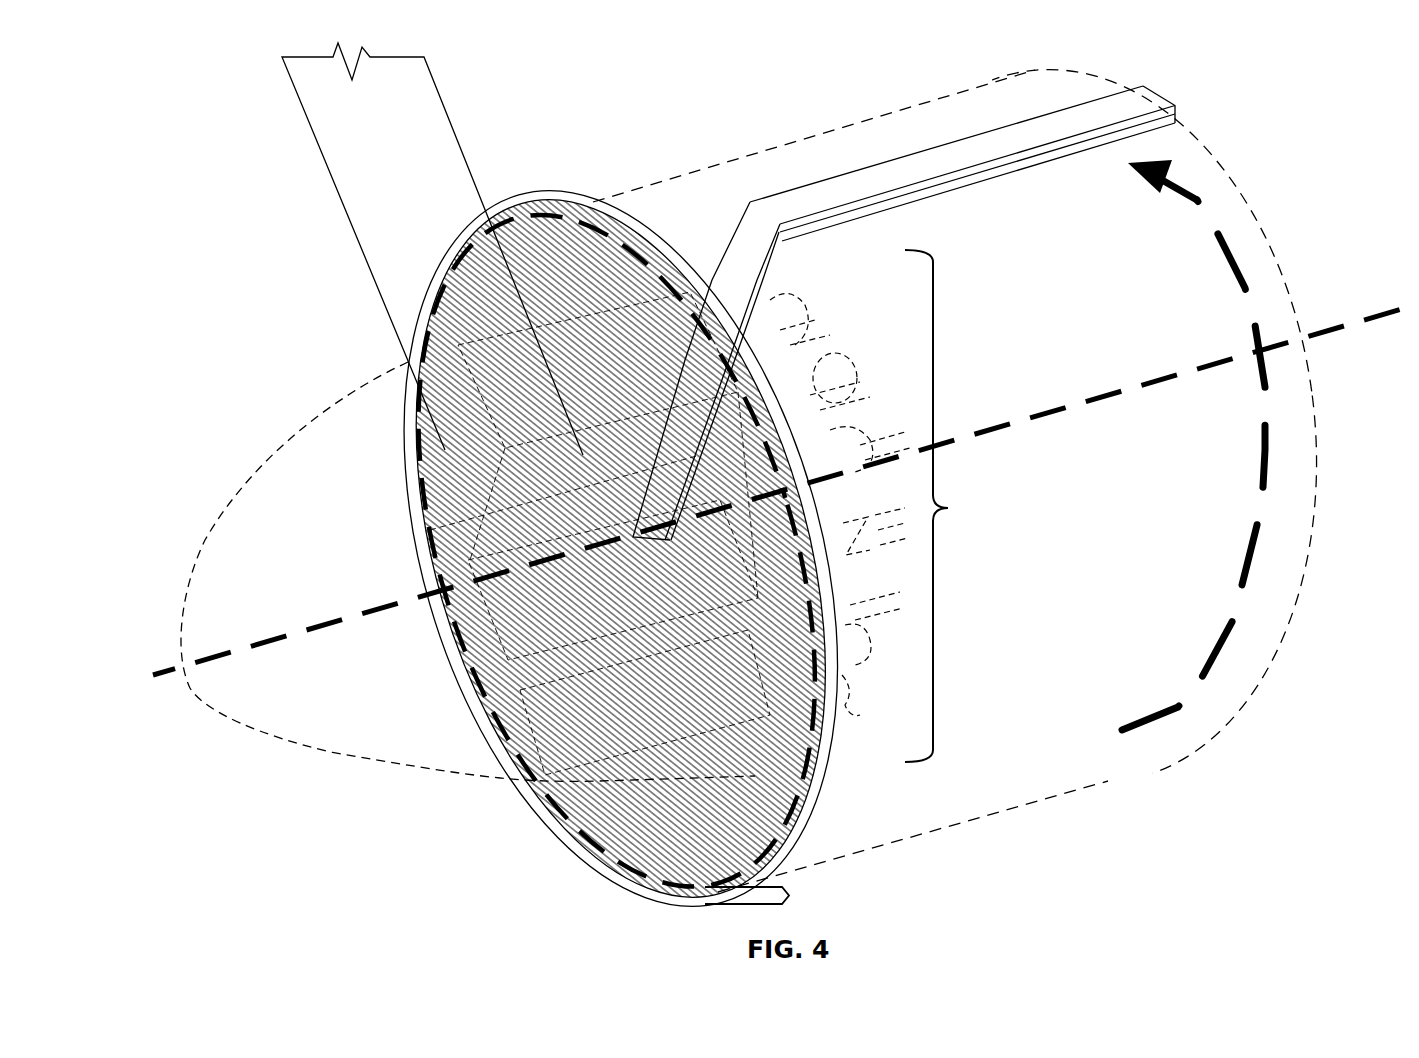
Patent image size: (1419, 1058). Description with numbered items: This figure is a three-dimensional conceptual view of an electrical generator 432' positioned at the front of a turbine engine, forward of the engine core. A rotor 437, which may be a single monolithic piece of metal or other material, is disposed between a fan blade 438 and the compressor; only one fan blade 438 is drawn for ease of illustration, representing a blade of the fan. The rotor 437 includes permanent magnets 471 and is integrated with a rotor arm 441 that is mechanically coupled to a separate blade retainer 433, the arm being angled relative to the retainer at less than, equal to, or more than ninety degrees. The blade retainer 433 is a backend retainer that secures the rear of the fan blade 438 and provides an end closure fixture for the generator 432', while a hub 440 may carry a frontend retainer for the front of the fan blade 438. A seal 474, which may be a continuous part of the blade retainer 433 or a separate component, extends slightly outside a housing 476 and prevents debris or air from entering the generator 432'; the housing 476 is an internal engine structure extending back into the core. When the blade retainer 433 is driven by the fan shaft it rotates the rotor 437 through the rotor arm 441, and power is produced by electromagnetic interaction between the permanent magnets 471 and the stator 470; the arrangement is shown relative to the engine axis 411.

The longitudinal axis 411 is at (1062, 409).
The electrical generator 432' is at (1239, 431).
The blade retainer 433 is at (816, 790).
The rotor 437 is at (906, 158).
The fan blade 438 is at (352, 203).
The hub 440 is at (278, 702).
The rotor arm 441 is at (741, 236).
The stator 470 is at (886, 506).
The permanent magnets 471 is at (1036, 166).
The seal 474 is at (772, 898).
The housing 476 is at (1105, 783).